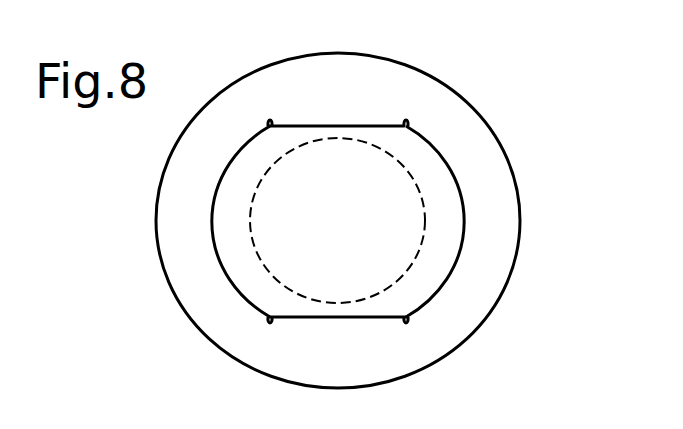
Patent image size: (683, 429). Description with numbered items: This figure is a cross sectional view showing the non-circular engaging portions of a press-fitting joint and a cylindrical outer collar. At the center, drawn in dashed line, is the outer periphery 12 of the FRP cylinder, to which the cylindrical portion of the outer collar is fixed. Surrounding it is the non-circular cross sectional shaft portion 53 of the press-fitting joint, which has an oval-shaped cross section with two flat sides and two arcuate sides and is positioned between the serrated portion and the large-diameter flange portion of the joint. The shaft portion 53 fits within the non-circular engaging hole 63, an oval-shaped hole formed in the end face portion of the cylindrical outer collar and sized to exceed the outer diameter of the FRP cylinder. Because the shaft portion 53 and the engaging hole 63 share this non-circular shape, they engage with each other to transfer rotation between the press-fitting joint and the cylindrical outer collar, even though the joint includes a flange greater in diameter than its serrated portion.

The non-circular cross sectional shaft portion 53 is at (382, 126).
The non-circular engaging hole 63 is at (430, 150).
The outer periphery 12 is at (408, 270).